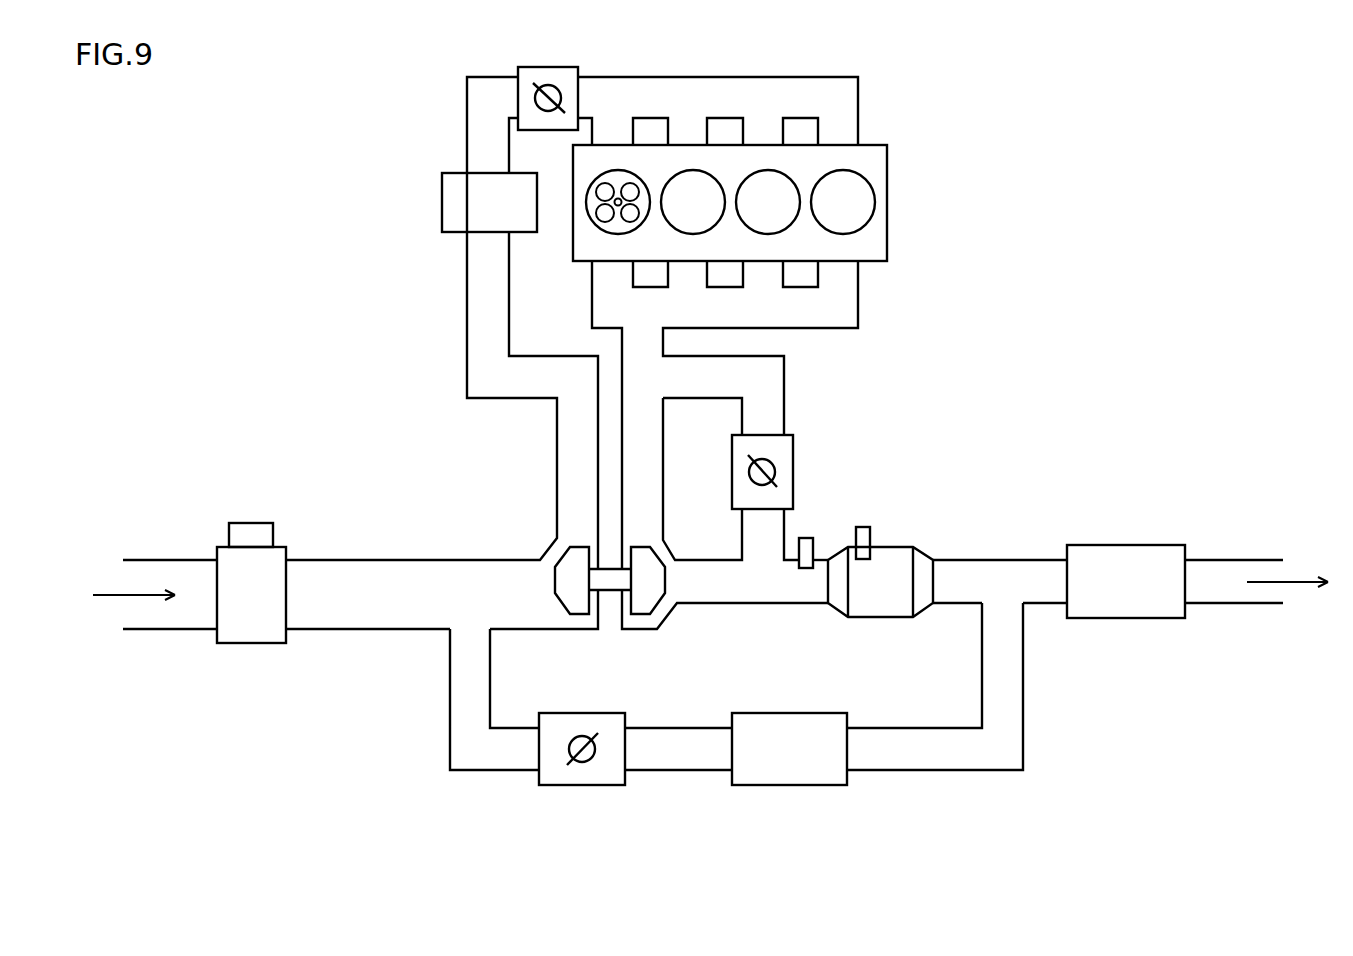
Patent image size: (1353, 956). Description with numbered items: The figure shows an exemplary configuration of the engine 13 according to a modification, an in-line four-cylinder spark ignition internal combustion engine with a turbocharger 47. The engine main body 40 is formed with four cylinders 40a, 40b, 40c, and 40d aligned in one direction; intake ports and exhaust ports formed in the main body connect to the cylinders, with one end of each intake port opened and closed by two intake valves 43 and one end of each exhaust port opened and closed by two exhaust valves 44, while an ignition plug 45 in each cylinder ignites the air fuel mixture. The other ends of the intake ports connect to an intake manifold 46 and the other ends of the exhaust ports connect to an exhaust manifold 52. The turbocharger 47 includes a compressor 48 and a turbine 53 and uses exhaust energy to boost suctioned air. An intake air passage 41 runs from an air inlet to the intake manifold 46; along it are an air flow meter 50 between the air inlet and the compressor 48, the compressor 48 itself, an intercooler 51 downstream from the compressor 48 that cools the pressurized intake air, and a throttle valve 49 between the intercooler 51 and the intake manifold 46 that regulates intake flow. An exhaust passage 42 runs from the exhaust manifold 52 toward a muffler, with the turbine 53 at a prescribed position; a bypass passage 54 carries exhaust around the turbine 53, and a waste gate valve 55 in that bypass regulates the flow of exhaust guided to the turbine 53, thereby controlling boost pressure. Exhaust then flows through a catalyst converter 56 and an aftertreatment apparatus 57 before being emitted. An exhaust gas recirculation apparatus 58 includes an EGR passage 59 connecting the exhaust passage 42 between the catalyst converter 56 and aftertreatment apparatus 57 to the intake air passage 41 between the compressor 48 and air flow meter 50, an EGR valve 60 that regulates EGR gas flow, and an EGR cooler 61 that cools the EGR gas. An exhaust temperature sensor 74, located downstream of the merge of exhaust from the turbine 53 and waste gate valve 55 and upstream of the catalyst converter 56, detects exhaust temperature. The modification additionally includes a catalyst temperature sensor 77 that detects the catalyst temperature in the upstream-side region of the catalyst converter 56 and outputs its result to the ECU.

The engine 13 is at (1088, 292).
The engine main body 40 is at (742, 209).
The cylinder 40a is at (610, 170).
The cylinder 40b is at (686, 170).
The cylinder 40c is at (760, 170).
The cylinder 40d is at (833, 170).
The intake air passage 41 is at (466, 330).
The exhaust passage 42 is at (992, 555).
The intake valve 43 is at (593, 184).
The exhaust valve 44 is at (594, 218).
The ignition plug 45 is at (610, 203).
The intake manifold 46 is at (862, 90).
The turbocharger 47 is at (647, 610).
The compressor 48 is at (568, 592).
The throttle valve 49 is at (527, 100).
The air flow meter 50 is at (251, 634).
The intercooler 51 is at (452, 204).
The exhaust manifold 52 is at (852, 298).
The turbine 53 is at (643, 597).
The bypass passage 54 is at (786, 392).
The waste gate valve 55 is at (784, 455).
The catalyst converter 56 is at (890, 539).
The aftertreatment apparatus 57 is at (1126, 555).
The exhaust gas recirculation apparatus 58 is at (1026, 703).
The EGR passage 59 is at (945, 760).
The EGR valve 60 is at (603, 772).
The EGR cooler 61 is at (794, 773).
The exhaust temperature sensor 74 is at (805, 533).
The catalyst temperature sensor 77 is at (862, 526).